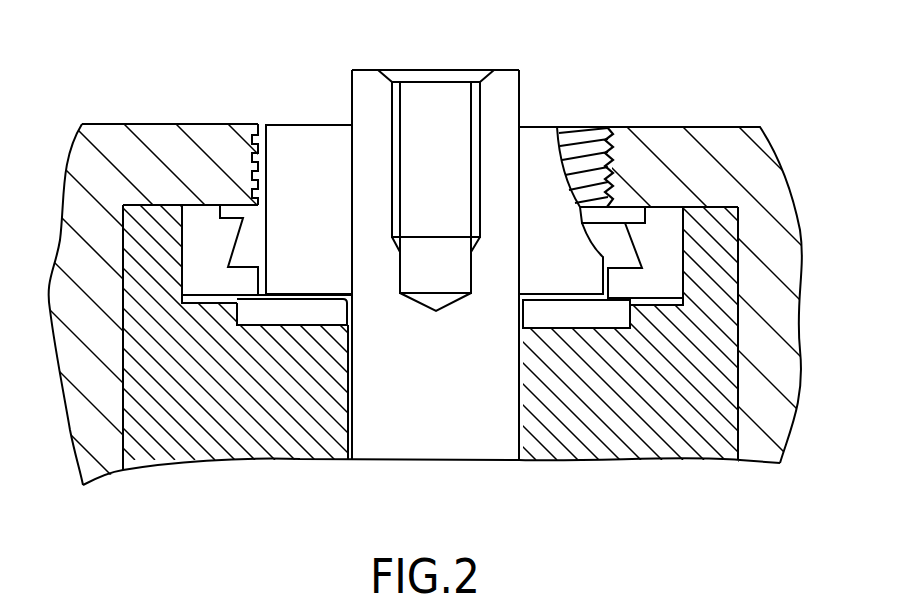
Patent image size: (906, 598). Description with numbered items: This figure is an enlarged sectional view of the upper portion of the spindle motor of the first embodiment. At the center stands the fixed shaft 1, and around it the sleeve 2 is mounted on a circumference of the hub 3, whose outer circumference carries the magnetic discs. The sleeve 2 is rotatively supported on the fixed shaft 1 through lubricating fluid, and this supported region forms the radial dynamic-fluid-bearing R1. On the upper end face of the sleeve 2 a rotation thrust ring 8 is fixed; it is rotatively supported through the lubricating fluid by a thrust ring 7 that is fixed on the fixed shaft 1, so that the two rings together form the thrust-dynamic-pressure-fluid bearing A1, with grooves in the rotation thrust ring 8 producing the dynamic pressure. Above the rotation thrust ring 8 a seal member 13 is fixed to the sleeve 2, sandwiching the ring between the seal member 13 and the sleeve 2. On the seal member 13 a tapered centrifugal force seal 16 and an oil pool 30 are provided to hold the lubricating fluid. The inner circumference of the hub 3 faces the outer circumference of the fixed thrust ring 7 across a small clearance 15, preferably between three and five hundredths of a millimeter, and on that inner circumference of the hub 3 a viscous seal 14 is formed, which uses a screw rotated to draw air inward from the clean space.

The fixed shaft 1 is at (378, 98).
The sleeve 2 is at (708, 228).
The hub 3 is at (762, 177).
The thrust ring 7 is at (307, 173).
The rotation thrust ring 8 is at (558, 318).
The seal member 13 is at (112, 124).
The viscous seal 14 is at (607, 128).
The small clearance 15 is at (253, 150).
The tapered centrifugal force seal 16 is at (200, 242).
The oil pool 30 is at (638, 217).
The thrust-dynamic-pressure-fluid bearing A1 is at (290, 299).
The radial dynamic-fluid-bearing R1 is at (347, 413).